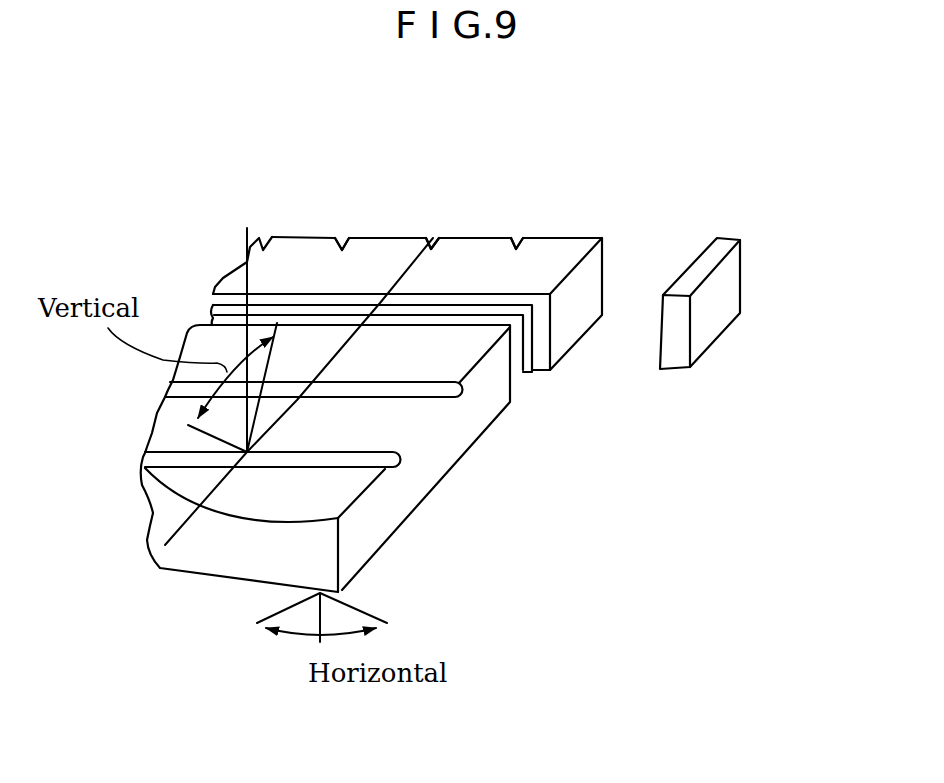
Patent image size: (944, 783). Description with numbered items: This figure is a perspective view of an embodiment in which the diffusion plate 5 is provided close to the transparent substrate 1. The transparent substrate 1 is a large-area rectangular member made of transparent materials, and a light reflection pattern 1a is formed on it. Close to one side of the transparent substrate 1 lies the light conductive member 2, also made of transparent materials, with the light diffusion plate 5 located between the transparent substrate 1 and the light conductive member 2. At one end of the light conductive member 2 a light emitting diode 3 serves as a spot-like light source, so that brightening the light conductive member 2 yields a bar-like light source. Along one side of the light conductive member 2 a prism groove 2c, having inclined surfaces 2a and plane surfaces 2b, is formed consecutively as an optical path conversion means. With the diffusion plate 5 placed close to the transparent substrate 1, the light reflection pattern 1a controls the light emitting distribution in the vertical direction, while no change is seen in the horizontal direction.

The transparent substrate 1 is at (448, 457).
The light reflection pattern 1a is at (385, 468).
The light conductive member 2 is at (606, 268).
The inclined surfaces 2a is at (342, 248).
The plane surfaces 2b is at (492, 238).
The prism groove 2c is at (612, 143).
The light emitting diode 3 is at (733, 273).
The light diffusion plate 5 is at (522, 375).